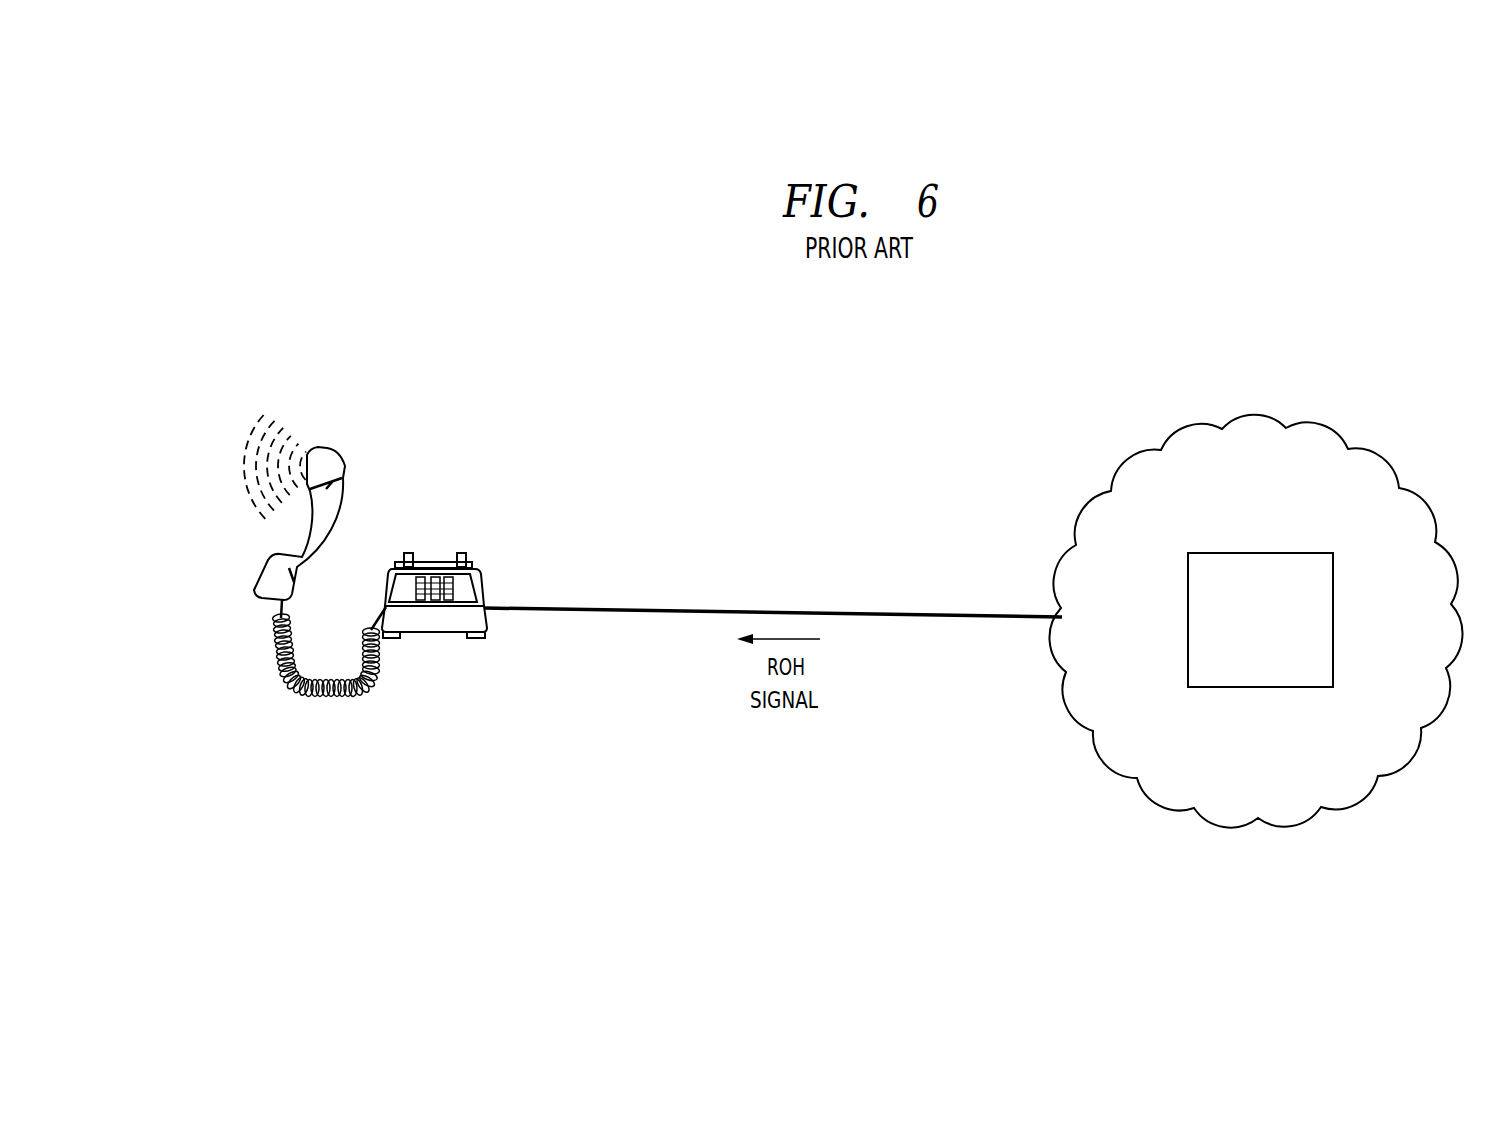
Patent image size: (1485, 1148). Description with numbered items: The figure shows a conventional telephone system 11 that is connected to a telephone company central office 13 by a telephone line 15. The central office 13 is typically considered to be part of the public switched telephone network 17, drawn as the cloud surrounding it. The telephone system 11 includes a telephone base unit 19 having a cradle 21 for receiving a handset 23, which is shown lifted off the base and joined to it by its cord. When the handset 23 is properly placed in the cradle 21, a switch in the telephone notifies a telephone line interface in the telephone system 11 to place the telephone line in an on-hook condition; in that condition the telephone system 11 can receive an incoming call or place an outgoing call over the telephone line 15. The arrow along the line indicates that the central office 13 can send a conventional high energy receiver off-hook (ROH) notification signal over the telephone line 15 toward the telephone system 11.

The telephone system 11 is at (466, 554).
The telephone company central office 13 is at (1262, 553).
The telephone line 15 is at (776, 611).
The public switched telephone network 17 is at (1256, 586).
The telephone base unit 19 is at (488, 624).
The cradle 21 is at (470, 562).
The handset 23 is at (263, 573).